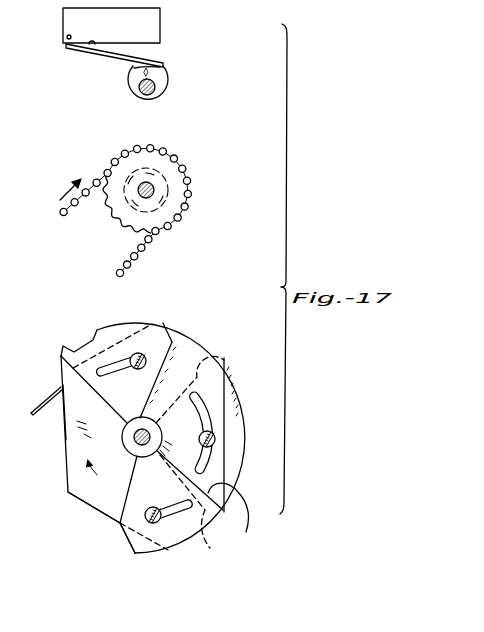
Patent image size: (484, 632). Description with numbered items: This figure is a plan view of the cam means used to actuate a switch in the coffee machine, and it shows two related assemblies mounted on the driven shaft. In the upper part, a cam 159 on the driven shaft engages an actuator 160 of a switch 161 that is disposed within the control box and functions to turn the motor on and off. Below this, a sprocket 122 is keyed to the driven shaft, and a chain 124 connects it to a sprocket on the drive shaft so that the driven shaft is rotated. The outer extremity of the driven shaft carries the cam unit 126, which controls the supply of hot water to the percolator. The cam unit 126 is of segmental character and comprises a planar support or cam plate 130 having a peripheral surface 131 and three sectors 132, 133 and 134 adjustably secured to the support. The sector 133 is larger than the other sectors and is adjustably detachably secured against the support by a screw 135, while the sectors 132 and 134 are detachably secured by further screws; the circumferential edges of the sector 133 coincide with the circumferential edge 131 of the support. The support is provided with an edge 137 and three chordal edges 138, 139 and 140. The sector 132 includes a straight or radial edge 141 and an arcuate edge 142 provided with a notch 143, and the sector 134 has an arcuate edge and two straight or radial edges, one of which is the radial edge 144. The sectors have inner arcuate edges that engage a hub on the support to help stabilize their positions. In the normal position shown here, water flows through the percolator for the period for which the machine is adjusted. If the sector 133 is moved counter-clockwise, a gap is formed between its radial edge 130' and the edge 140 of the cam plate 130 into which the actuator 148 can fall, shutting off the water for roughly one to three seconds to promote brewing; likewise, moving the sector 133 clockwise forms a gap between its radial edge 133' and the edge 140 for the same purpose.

The switch 161 is at (160, 26).
The actuator 160 is at (112, 58).
The cam 159 is at (160, 96).
The sprocket 122 is at (121, 212).
The chain 124 is at (125, 265).
The cam unit 126 is at (173, 314).
The notch 143 is at (87, 341).
The edge 137 is at (68, 378).
The cam plate 130 is at (99, 454).
The chordal edge 138 is at (65, 440).
The chordal edge 139 is at (88, 506).
The radial edge 144 is at (118, 529).
The actuator 148 is at (46, 399).
The radial edge 141 is at (106, 400).
The arcuate edge 142 is at (137, 322).
The sector 132 is at (143, 323).
The peripheral surface 131 is at (197, 336).
The sector 133 is at (245, 435).
The radial edge 133' is at (206, 379).
The radial edge 130' is at (208, 509).
The chordal edge 140 is at (246, 527).
The sector 134 is at (199, 539).
The screw 135 is at (200, 440).